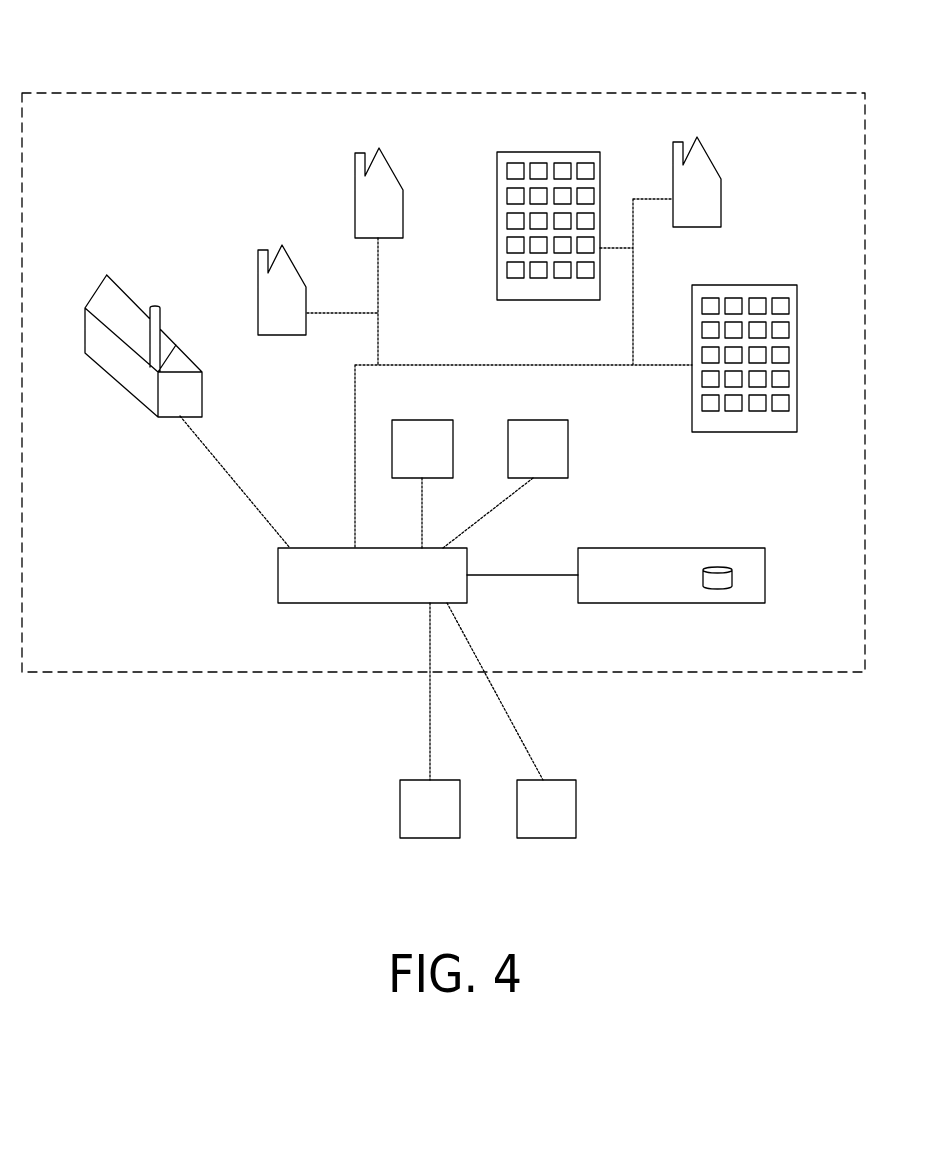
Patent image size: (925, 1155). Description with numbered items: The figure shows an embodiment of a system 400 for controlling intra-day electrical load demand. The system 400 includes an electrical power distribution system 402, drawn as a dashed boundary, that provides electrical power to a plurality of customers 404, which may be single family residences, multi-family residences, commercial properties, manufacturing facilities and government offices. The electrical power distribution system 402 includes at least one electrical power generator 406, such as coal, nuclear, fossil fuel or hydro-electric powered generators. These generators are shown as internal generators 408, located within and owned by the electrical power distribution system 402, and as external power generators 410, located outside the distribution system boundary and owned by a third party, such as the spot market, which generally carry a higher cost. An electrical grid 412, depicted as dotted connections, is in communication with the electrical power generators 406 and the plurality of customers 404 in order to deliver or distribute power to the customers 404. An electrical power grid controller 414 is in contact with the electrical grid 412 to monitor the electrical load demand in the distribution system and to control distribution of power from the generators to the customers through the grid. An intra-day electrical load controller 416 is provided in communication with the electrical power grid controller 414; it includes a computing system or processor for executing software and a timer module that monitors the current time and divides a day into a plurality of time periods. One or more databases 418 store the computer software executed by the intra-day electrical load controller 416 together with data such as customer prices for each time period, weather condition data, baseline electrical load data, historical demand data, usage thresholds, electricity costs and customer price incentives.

The system for controlling intra-day electrical load 400 is at (77, 35).
The electrical power distribution system 402 is at (165, 673).
The customers 404 is at (123, 384).
The electrical power generator 406 is at (485, 636).
The internal generators 408 is at (392, 420).
The external power generators 410 is at (427, 838).
The electrical grid 412 is at (215, 458).
The electrical power grid controller 414 is at (328, 603).
The intra-day electrical load controller 416 is at (688, 550).
The databases 418 is at (715, 566).